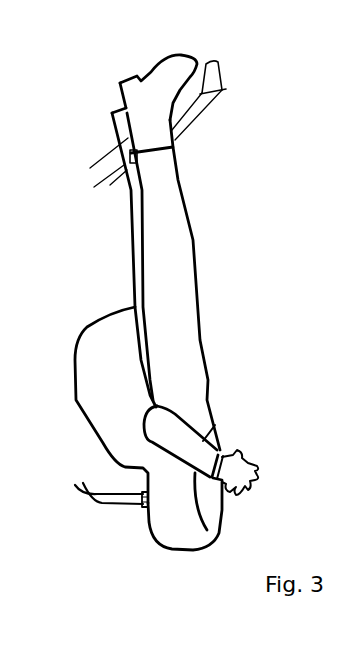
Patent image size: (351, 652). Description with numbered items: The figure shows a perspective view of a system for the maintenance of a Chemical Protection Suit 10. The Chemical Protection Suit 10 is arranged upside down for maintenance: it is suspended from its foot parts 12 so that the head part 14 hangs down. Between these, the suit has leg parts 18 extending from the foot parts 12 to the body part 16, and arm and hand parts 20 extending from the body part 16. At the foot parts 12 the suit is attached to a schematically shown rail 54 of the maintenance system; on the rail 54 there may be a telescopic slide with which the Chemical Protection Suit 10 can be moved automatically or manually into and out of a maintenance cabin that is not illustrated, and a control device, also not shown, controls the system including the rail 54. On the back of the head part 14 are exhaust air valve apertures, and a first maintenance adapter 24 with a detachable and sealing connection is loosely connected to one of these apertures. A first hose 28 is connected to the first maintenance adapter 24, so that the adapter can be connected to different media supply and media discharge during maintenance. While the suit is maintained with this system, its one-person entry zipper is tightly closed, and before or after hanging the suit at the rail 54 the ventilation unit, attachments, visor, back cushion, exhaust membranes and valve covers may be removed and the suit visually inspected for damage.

The Chemical Protection Suit 10 is at (188, 347).
The foot parts 12 is at (160, 87).
The head part 14 is at (177, 530).
The body part 16 is at (100, 370).
The leg parts 18 is at (173, 243).
The arm and hand parts 20 is at (240, 451).
The first maintenance adapter 24 is at (142, 508).
The first hose 28 is at (105, 503).
The rail 54 is at (95, 165).